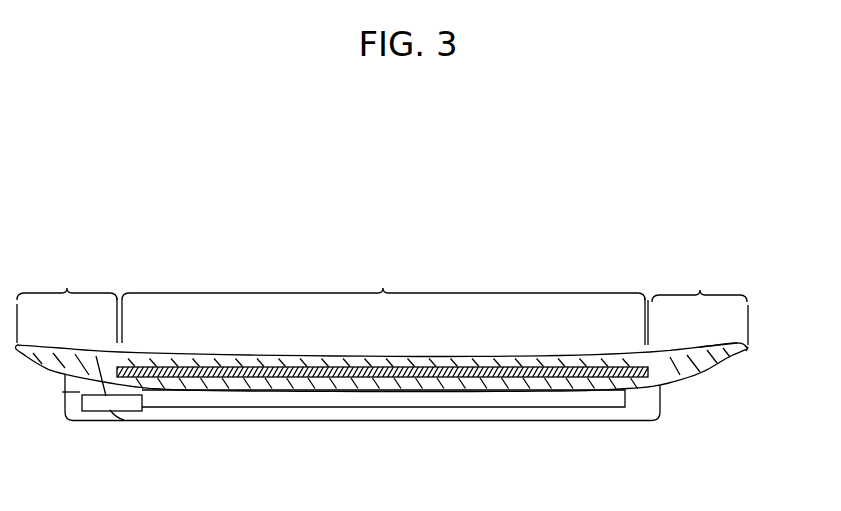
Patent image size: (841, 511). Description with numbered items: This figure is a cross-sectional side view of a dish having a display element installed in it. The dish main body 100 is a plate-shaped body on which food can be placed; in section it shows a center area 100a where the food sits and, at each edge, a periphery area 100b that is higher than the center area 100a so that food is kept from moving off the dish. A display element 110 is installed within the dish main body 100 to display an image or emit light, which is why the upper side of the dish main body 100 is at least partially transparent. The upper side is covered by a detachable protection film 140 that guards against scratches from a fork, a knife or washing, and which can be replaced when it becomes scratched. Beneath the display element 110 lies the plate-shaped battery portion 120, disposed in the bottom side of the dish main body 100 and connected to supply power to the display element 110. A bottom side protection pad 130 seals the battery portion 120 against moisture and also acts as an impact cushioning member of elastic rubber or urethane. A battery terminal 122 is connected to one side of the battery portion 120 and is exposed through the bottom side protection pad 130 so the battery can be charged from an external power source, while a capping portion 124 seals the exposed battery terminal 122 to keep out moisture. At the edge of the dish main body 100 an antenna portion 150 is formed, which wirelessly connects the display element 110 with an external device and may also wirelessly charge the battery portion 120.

The dish main body 100 is at (692, 367).
The center area 100a is at (383, 304).
The periphery area 100b is at (382, 304).
The display element 110 is at (410, 377).
The battery portion 120 is at (607, 398).
The battery terminal 122 is at (93, 406).
The capping portion 124 is at (62, 392).
The bottom side protection pad 130 is at (505, 410).
The protection film 140 is at (737, 345).
The antenna portion 150 is at (748, 352).